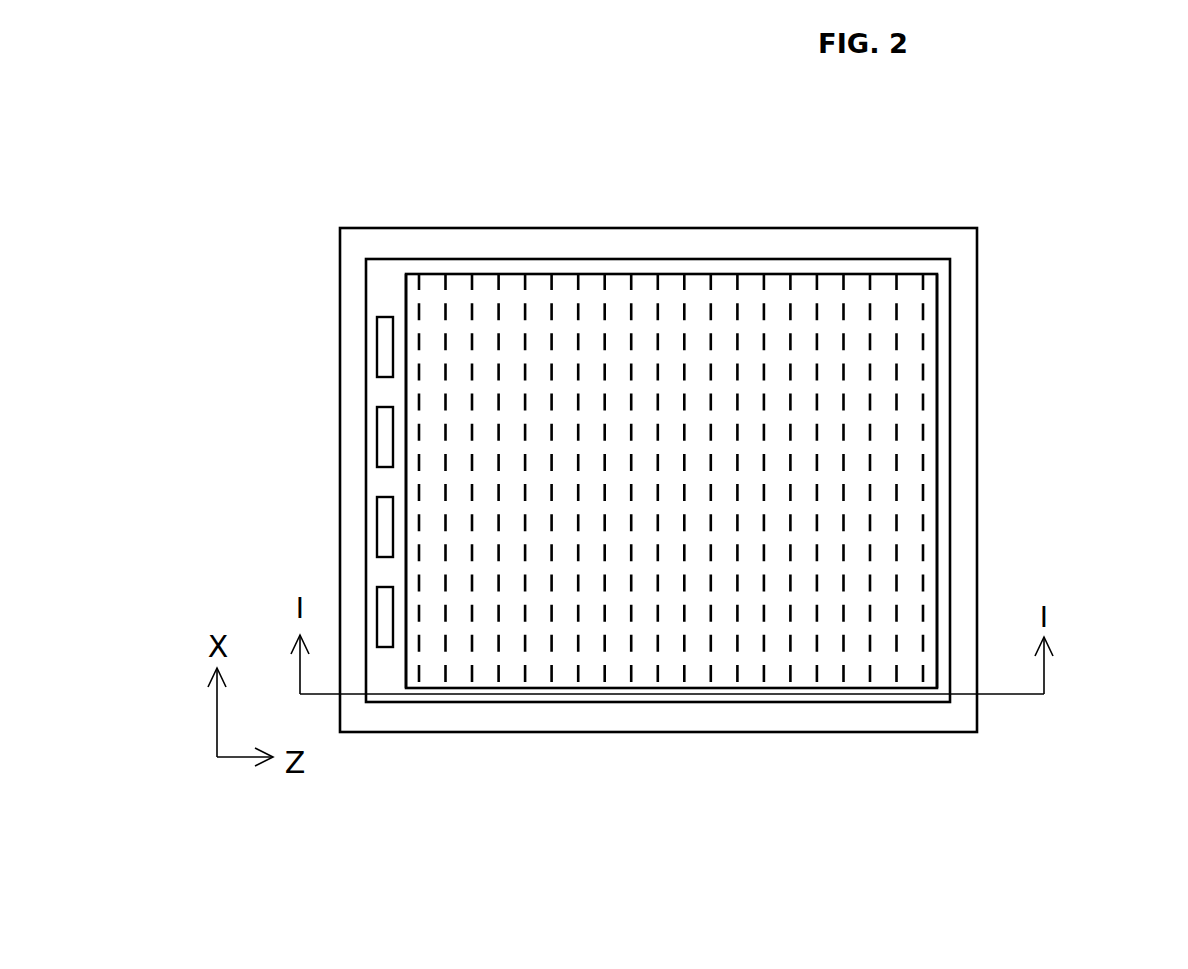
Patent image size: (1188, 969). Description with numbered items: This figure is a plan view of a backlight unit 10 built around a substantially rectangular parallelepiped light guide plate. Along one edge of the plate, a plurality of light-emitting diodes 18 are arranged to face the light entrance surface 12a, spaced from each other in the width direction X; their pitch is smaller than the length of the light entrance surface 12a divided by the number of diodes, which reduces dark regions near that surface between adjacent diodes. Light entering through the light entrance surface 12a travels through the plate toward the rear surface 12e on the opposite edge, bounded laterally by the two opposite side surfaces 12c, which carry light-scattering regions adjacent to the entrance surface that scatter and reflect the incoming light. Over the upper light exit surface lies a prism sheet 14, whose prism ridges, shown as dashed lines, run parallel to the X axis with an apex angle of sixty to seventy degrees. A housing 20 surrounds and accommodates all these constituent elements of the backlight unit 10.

The backlight unit 10 is at (505, 210).
The light entrance surface 12a is at (407, 389).
The side surfaces 12c is at (670, 274).
The rear surface 12e is at (937, 350).
The prism sheet 14 is at (802, 313).
The light-emitting diodes 18 is at (385, 647).
The housing 20 is at (960, 705).